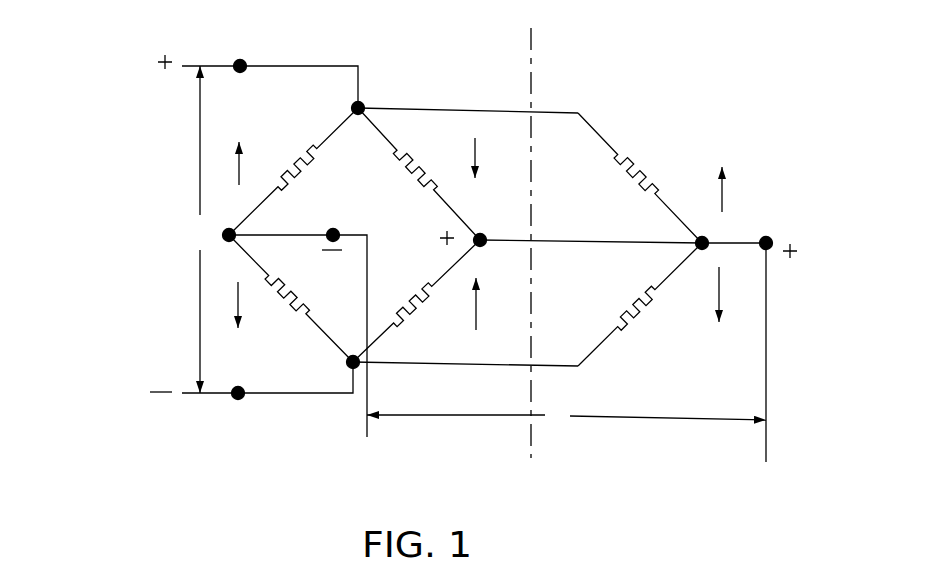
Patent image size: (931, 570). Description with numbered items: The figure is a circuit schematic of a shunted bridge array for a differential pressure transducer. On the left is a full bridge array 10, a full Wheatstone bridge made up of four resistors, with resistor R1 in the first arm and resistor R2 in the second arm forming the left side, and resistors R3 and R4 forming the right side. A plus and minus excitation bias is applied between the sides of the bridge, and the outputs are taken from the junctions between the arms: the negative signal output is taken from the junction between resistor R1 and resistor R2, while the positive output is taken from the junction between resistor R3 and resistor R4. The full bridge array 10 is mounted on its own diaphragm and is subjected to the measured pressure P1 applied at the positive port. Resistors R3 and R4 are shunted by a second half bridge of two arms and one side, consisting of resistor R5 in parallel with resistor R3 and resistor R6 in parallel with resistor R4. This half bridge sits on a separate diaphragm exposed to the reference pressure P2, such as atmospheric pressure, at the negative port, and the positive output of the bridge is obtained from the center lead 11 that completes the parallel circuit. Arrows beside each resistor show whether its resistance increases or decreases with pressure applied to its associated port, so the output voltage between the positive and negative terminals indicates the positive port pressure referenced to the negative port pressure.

The full bridge array 10 is at (436, 58).
The center lead 11 is at (701, 223).
The resistor R1 is at (293, 171).
The resistor R2 is at (291, 298).
The resistor R3 is at (419, 174).
The resistor R4 is at (416, 301).
The resistor R5 is at (650, 178).
The resistor R6 is at (648, 304).
The pressure at the positive port P1 is at (325, 473).
The pressure at the negative port P2 is at (651, 471).